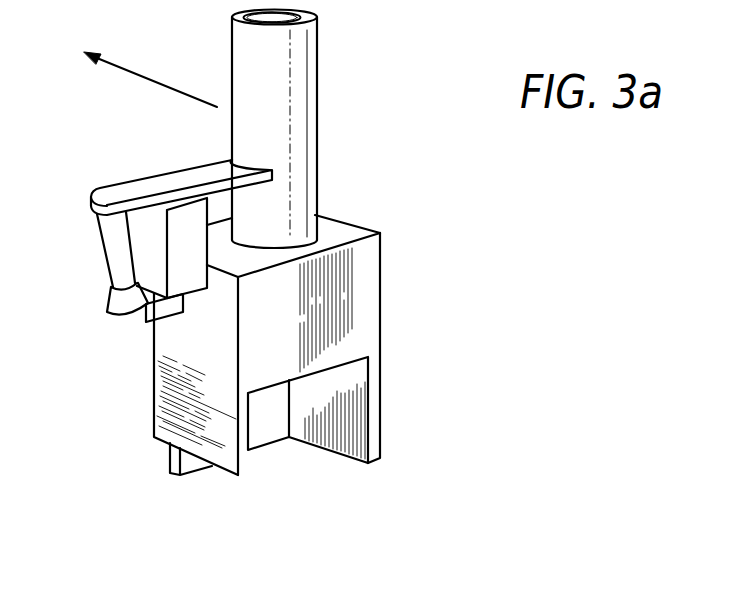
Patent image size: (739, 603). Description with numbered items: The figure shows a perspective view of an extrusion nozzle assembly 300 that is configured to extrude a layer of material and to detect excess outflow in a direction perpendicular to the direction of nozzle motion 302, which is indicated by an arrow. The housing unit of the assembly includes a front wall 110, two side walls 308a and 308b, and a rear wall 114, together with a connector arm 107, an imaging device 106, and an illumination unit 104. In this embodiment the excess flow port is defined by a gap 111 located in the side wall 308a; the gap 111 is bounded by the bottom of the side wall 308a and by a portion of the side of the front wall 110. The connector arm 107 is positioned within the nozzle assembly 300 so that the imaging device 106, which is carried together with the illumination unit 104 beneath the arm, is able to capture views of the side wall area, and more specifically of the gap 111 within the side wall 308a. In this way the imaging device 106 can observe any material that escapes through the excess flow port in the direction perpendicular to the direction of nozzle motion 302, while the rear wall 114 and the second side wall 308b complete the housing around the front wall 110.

The extrusion nozzle assembly 300 is at (345, 157).
The direction of nozzle motion 302 is at (181, 92).
The connector arm 107 is at (127, 191).
The illumination unit 104 is at (108, 240).
The imaging device 106 is at (163, 313).
The rear wall 114 is at (360, 290).
The side wall 308a is at (163, 422).
The side wall 308b is at (380, 383).
The front wall 110 is at (267, 417).
The gap 111 is at (181, 483).